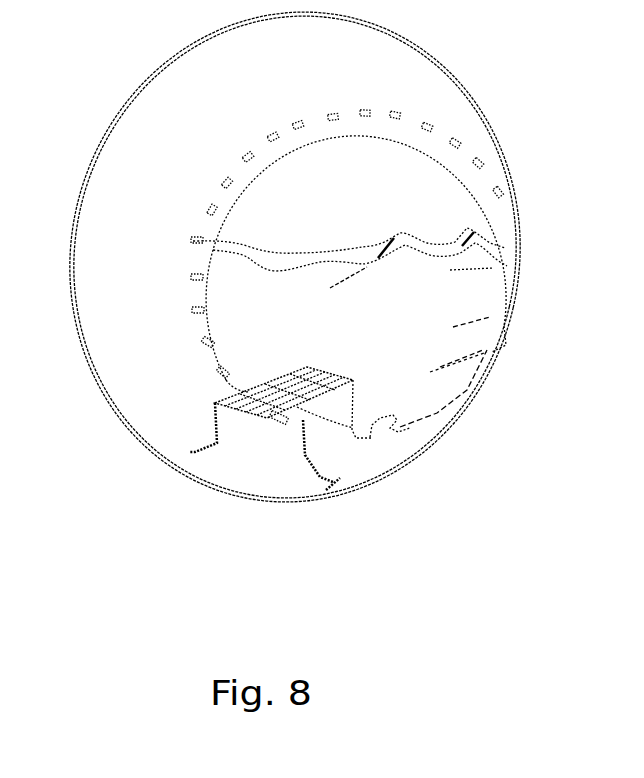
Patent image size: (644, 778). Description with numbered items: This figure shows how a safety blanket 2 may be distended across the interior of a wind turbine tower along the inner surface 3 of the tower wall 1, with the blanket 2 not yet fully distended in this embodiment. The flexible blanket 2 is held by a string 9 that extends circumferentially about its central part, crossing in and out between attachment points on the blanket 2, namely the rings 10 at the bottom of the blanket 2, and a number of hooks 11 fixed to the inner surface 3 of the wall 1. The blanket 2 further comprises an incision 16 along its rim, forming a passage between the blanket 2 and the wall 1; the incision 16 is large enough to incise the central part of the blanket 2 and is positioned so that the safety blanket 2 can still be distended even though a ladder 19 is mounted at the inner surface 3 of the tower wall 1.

The wall 1 is at (133, 92).
The safety blanket 2 is at (397, 342).
The inner surface 3 is at (190, 137).
The string 9 is at (493, 243).
The rings 10 is at (492, 333).
The hooks 11 is at (498, 197).
The incision 16 is at (353, 393).
The ladder 19 is at (278, 413).